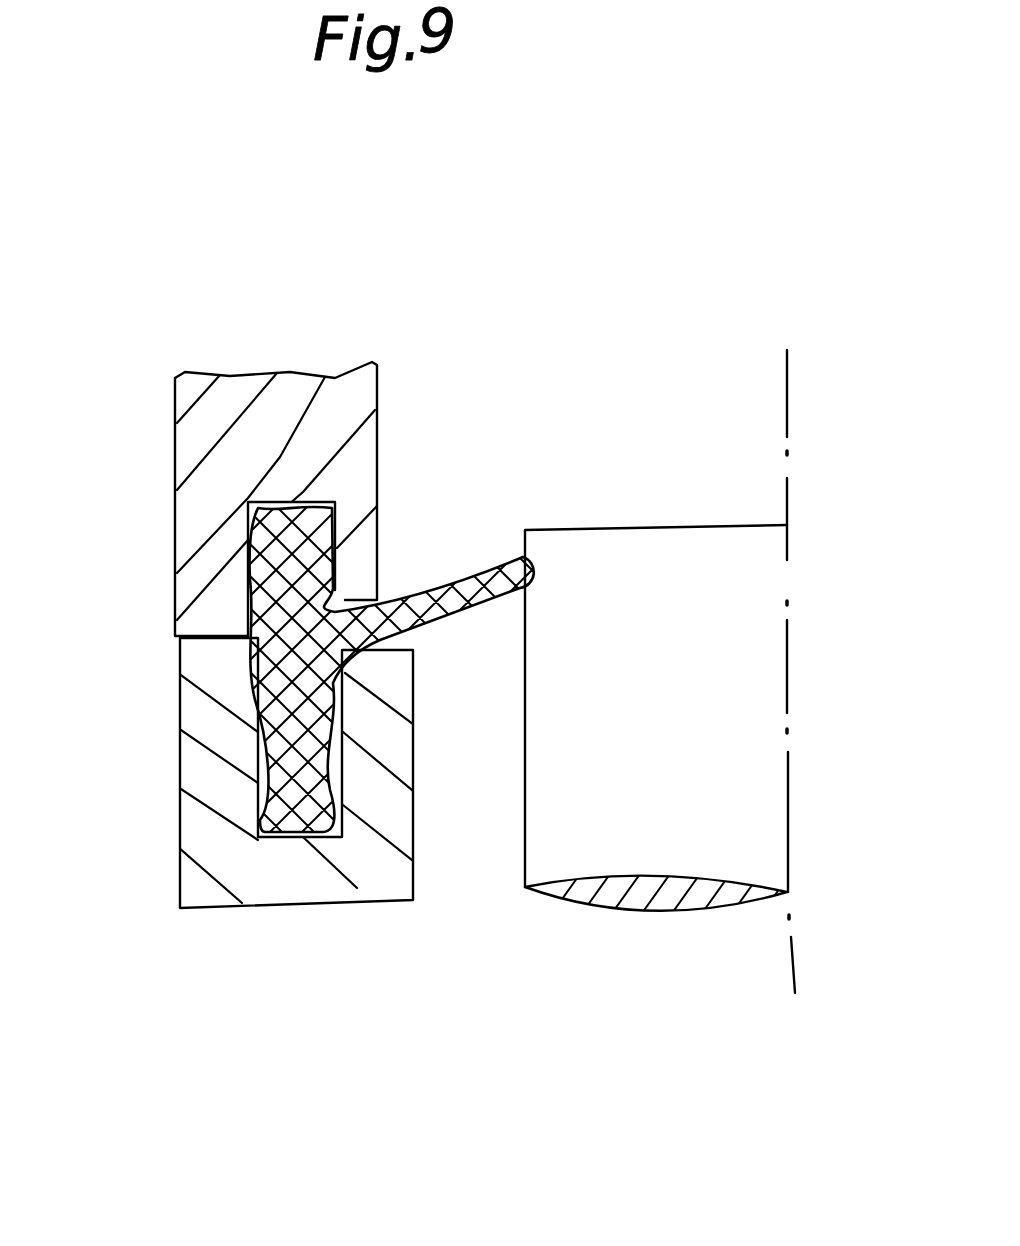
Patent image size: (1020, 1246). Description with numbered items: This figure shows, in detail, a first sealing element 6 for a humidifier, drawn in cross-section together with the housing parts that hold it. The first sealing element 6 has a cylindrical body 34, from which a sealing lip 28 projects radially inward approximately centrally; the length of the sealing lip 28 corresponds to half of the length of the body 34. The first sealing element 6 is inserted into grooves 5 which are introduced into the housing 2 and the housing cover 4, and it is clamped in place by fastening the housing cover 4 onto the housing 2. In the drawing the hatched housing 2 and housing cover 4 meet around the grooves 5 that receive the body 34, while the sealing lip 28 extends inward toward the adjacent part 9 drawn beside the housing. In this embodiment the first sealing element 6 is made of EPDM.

The housing 2 is at (315, 877).
The housing cover 4 is at (275, 405).
The grooves 5 is at (257, 783).
The first sealing element 6 is at (465, 455).
The shaft 9 is at (733, 708).
The sealing lip 28 is at (457, 603).
The cylindrical body 34 is at (272, 677).